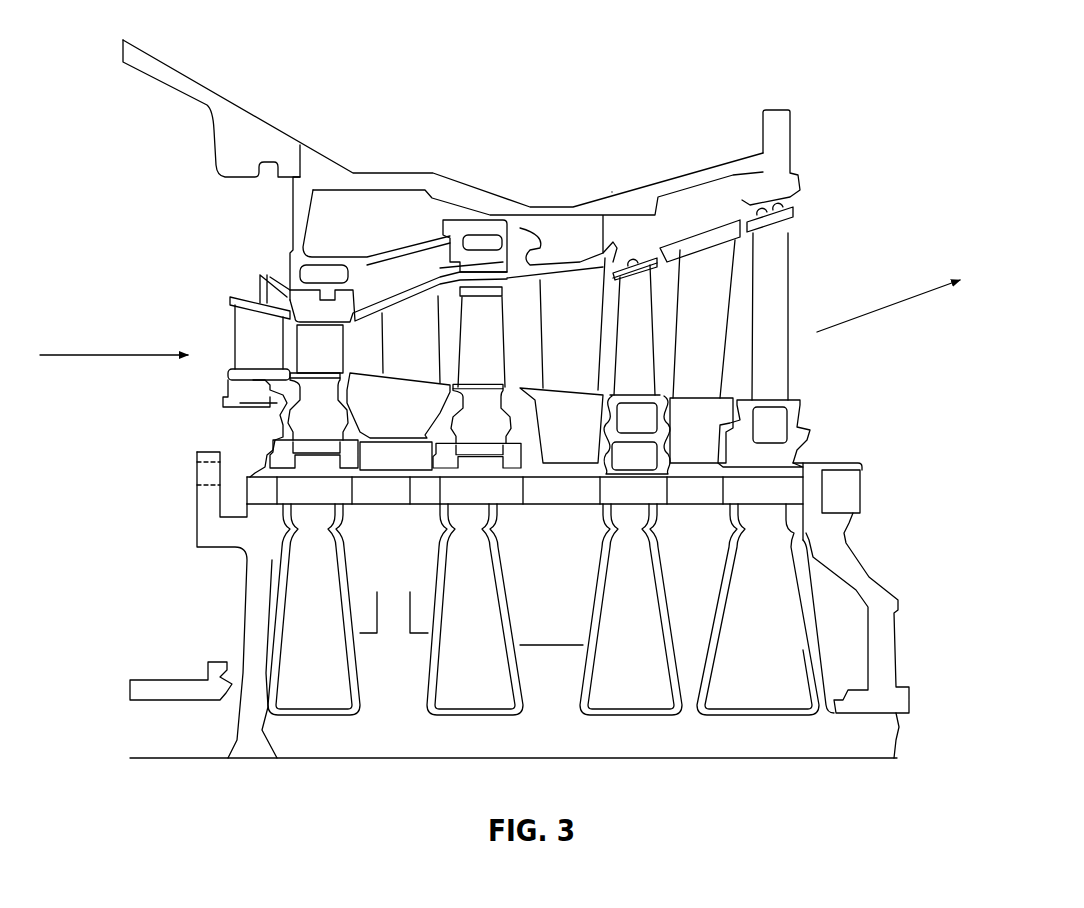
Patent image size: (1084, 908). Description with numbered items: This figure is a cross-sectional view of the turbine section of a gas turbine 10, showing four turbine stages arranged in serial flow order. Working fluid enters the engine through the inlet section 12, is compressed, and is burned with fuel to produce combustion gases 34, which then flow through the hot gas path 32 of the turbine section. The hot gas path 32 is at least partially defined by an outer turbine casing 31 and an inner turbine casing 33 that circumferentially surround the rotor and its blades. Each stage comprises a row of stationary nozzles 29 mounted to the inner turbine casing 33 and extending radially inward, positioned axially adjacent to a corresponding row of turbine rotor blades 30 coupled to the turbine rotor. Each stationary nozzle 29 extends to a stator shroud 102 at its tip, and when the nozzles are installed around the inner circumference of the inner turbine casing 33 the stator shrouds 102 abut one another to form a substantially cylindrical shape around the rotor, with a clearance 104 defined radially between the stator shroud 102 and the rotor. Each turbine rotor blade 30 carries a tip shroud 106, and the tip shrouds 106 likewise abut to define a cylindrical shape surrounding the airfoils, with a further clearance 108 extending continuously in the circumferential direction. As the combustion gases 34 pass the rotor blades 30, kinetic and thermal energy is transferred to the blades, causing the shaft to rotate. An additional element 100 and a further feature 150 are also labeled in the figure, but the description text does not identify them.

The gas turbine 10 is at (612, 190).
The inlet section 12 is at (343, 82).
The stationary nozzles 29 is at (424, 349).
The turbine rotor blades 30 is at (333, 363).
The outer turbine casing 31 is at (373, 185).
The hot gas path 32 is at (370, 352).
The inner turbine casing 33 is at (418, 232).
The combustion gases 34 is at (80, 355).
The first stage stator 100 is at (283, 356).
The stator shroud 102 is at (420, 424).
The clearance 104 is at (392, 448).
The tip shroud 106 is at (510, 277).
The clearance 108 is at (481, 270).
The inner seal 150 is at (307, 347).